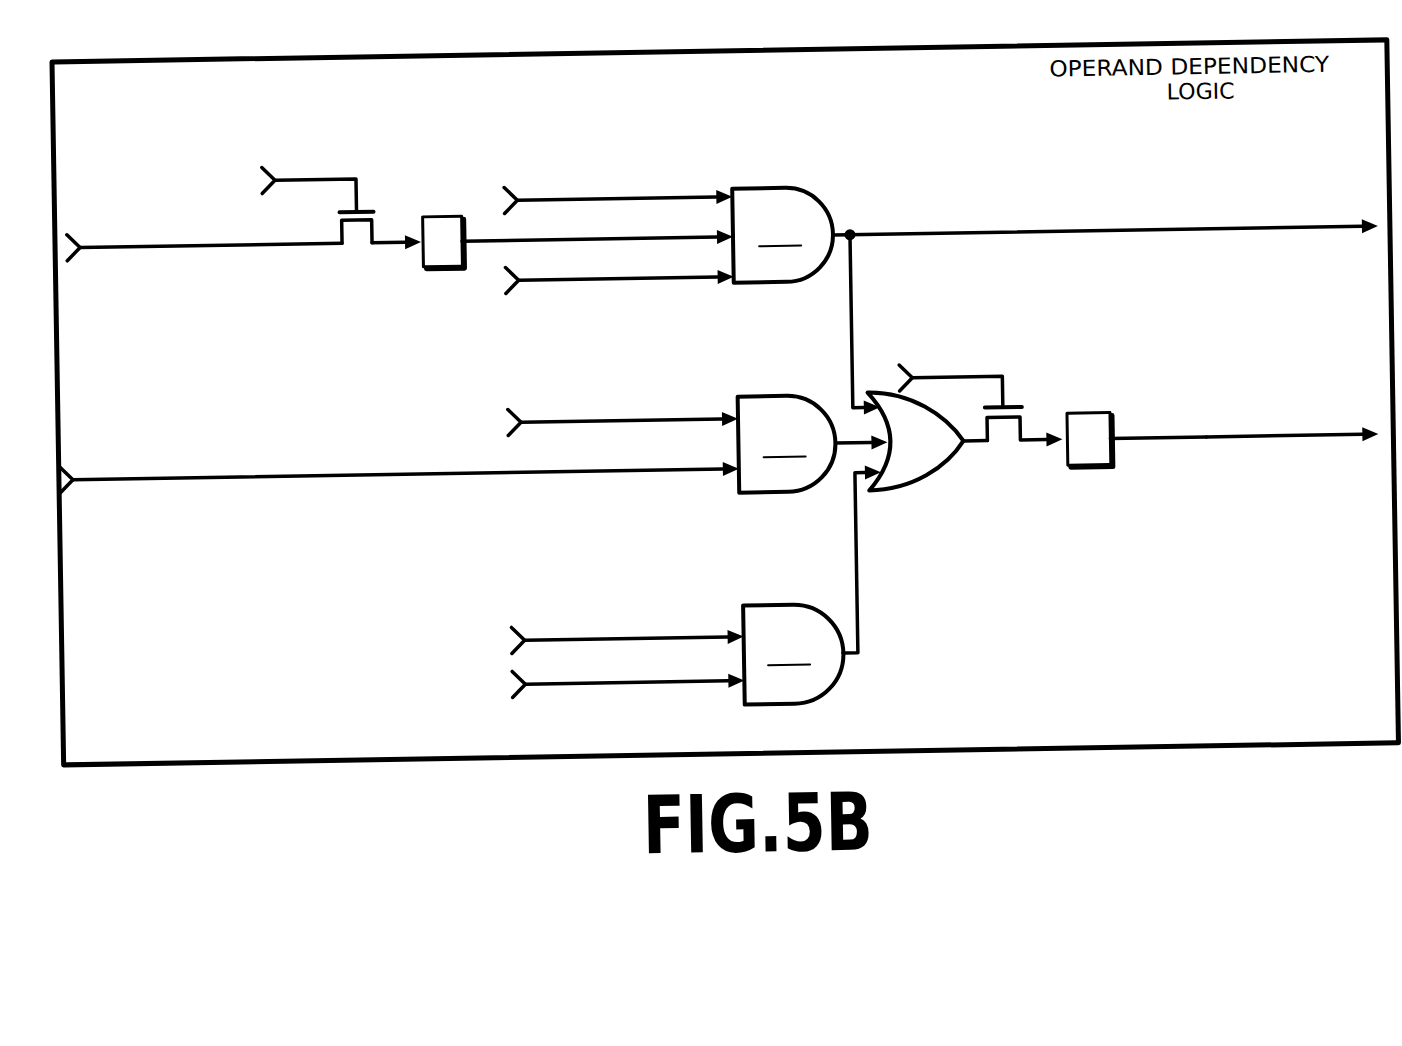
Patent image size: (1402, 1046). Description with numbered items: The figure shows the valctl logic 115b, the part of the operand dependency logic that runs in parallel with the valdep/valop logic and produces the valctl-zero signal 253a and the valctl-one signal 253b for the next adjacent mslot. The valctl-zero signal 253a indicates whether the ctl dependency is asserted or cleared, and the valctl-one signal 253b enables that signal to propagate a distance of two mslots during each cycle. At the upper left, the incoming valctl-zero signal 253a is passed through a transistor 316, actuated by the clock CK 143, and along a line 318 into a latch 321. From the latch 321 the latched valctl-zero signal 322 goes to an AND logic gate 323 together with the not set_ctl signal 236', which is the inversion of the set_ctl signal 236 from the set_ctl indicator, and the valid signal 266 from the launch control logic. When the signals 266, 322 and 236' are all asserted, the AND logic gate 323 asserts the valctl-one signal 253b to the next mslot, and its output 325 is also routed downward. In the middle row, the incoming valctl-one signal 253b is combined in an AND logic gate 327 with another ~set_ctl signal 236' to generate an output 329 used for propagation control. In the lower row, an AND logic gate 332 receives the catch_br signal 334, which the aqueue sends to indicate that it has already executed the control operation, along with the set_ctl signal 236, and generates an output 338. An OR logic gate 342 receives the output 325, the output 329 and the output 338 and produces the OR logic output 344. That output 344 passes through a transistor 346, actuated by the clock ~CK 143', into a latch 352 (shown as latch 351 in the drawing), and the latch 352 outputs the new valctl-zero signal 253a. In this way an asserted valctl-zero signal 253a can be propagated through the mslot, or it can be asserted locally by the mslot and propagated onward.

The valctl logic 115b is at (1178, 767).
The clock CK 143 is at (336, 176).
The clock ~CK 143' is at (974, 372).
The transistor 316 is at (356, 266).
The transistor output line 318 is at (378, 240).
The latch 321 is at (438, 276).
The valctl[0] signal 322 is at (481, 256).
The valctl[0] signal 253a is at (138, 250).
The valctl[1] signal 253b is at (1187, 250).
The ~set_ctl signal 236' is at (620, 287).
The set_ctl signal 236 is at (628, 692).
The valid signal 266 is at (588, 290).
The AND logic gate 323 is at (783, 235).
The output of AND logic gate 323 325 is at (848, 302).
The AND logic gate 327 is at (787, 444).
The output of AND logic gate 327 329 is at (848, 454).
The AND logic gate 332 is at (793, 654).
The catch_br signal 334 is at (549, 641).
The output of AND logic gate 332 338 is at (855, 666).
The OR logic gate 342 is at (905, 478).
The OR logic output 344 is at (960, 460).
The transistor 346 is at (1008, 470).
The latch 351 is at (1024, 444).
The latch 352 is at (1111, 484).